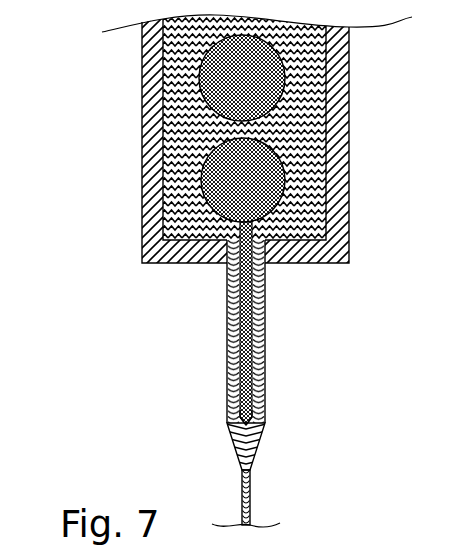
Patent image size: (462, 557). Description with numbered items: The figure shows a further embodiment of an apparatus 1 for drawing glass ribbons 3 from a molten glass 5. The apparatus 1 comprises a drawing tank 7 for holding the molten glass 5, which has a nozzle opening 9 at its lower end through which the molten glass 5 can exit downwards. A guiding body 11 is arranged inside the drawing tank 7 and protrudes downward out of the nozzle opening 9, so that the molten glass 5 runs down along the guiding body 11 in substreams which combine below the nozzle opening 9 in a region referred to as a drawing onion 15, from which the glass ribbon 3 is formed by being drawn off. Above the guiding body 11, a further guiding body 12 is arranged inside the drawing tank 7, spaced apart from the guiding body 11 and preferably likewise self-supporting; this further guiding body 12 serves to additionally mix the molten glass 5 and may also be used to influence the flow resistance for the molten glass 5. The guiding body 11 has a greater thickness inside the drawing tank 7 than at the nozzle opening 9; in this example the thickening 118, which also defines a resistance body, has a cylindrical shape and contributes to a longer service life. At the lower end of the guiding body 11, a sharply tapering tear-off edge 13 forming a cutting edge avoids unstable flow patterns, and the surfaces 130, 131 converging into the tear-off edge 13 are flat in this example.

The apparatus 1 is at (435, 100).
The glass ribbon 3 is at (252, 503).
The molten glass 5 is at (326, 212).
The drawing tank 7 is at (143, 221).
The nozzle opening 9 is at (264, 273).
The guiding body 11 is at (227, 328).
The further guiding body 12 is at (143, 88).
The tear-off edge 13 is at (235, 427).
The drawing onion 15 is at (258, 443).
The thickening 118 is at (143, 168).
The surface 130 is at (227, 410).
The surface 131 is at (263, 415).